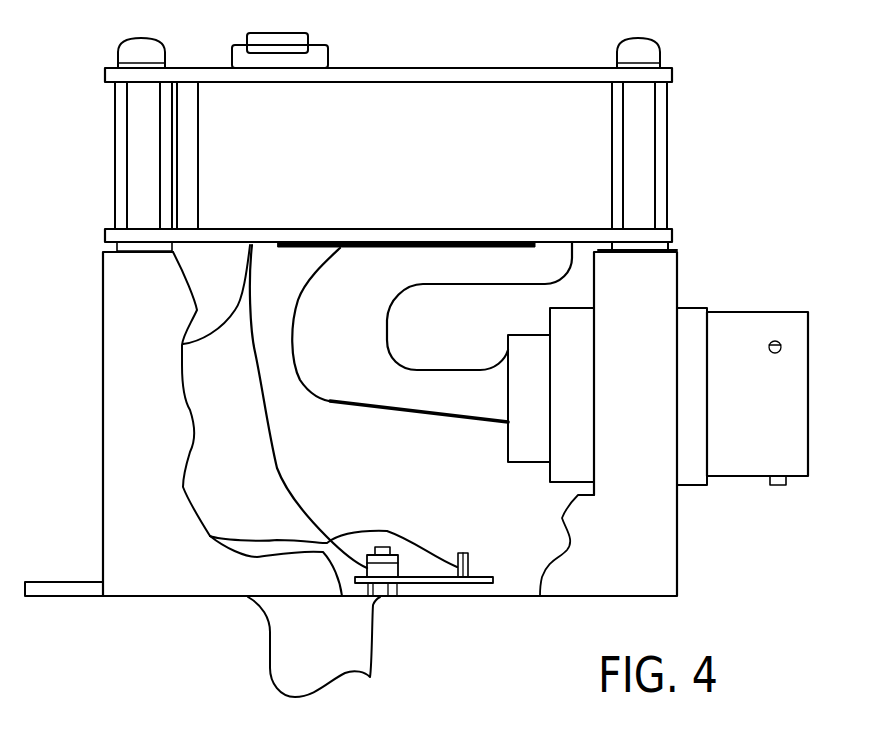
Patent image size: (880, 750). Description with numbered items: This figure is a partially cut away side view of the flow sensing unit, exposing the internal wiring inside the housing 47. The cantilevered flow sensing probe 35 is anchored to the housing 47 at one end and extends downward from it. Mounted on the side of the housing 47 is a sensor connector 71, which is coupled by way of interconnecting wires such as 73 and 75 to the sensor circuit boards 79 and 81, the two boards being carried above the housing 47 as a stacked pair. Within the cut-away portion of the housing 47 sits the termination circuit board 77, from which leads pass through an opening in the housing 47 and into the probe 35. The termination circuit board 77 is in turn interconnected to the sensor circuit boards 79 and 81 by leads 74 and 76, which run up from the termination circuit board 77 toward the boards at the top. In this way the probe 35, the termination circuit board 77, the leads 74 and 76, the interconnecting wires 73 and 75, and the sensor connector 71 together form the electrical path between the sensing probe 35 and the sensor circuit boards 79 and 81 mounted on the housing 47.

The sensor circuit board 79 is at (658, 75).
The sensor circuit board 81 is at (660, 236).
The interconnecting wire 75 is at (433, 283).
The lead 74 is at (237, 298).
The lead 76 is at (254, 354).
The interconnecting wire 73 is at (383, 405).
The housing 47 is at (102, 462).
The sensor connector 71 is at (738, 478).
The flow sensing probe 35 is at (280, 638).
The termination circuit board 77 is at (430, 582).